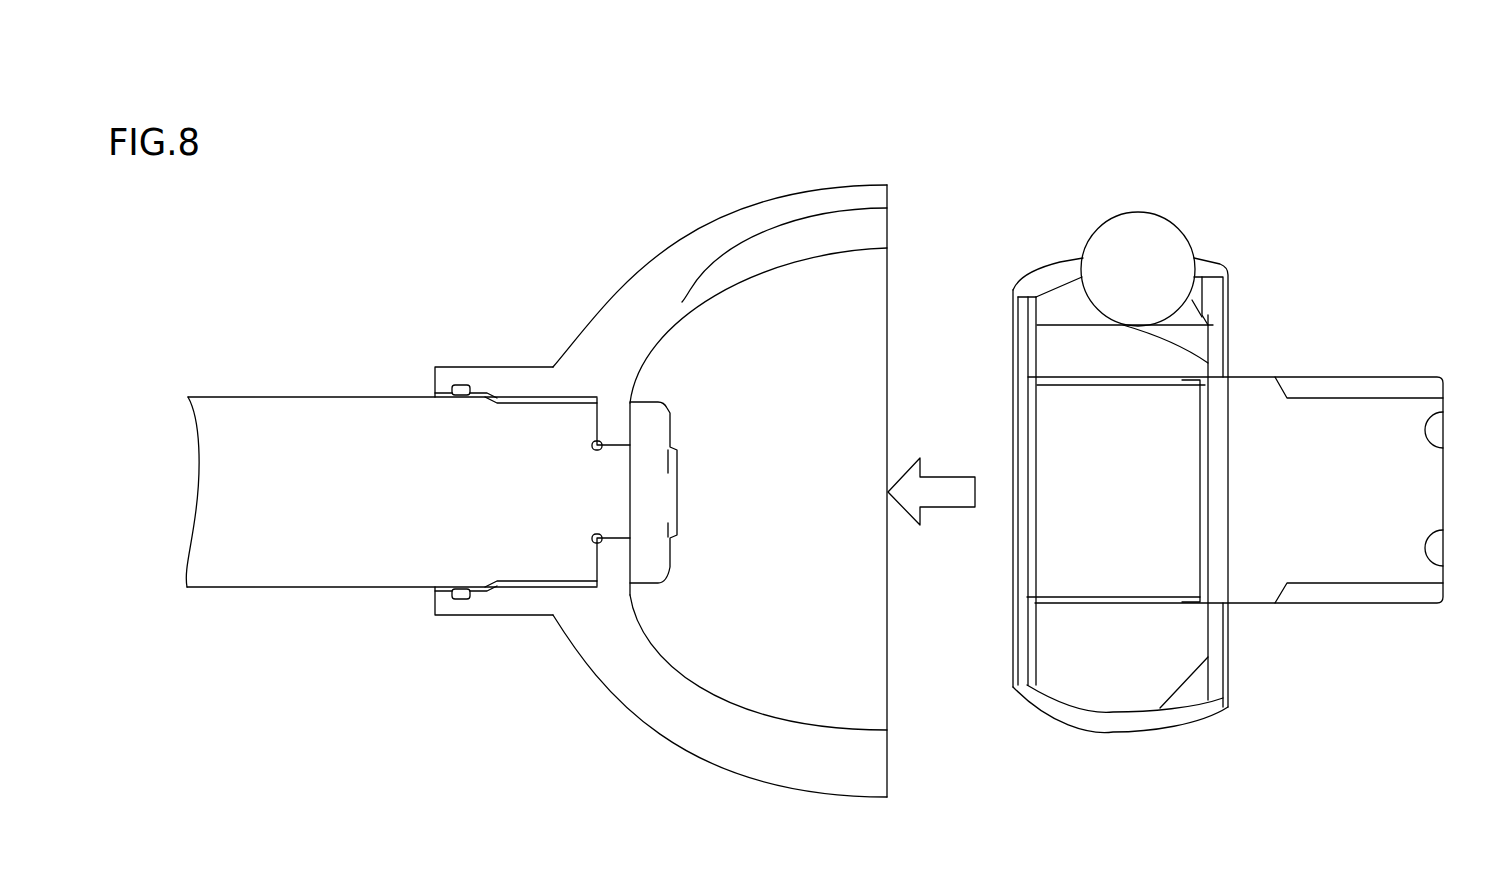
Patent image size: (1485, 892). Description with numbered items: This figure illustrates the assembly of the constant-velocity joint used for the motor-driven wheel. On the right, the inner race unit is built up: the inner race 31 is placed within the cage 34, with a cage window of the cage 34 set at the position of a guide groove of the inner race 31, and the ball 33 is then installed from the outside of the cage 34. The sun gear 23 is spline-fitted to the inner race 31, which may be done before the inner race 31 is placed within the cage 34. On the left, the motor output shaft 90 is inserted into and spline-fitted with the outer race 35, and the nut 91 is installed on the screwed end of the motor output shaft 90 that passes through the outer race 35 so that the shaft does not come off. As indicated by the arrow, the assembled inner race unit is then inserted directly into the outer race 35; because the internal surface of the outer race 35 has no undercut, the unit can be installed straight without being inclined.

The motor output shaft 90 is at (313, 405).
The nut 91 is at (650, 413).
The outer race 35 is at (592, 668).
The ball 33 is at (1138, 223).
The cage 34 is at (1214, 268).
The inner race 31 is at (1193, 658).
The sun gear 23 is at (1255, 597).